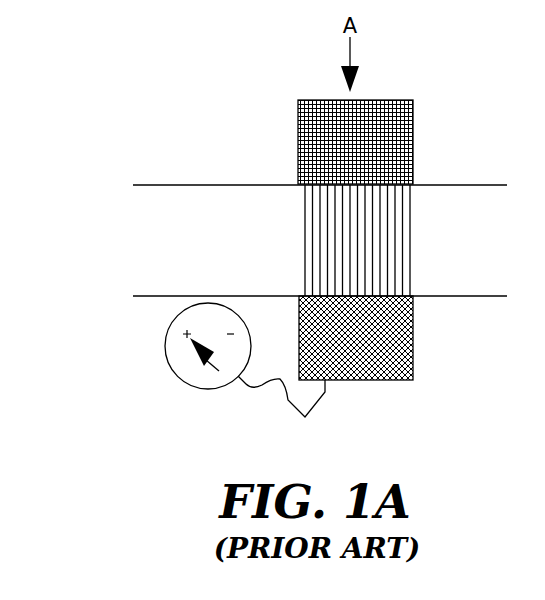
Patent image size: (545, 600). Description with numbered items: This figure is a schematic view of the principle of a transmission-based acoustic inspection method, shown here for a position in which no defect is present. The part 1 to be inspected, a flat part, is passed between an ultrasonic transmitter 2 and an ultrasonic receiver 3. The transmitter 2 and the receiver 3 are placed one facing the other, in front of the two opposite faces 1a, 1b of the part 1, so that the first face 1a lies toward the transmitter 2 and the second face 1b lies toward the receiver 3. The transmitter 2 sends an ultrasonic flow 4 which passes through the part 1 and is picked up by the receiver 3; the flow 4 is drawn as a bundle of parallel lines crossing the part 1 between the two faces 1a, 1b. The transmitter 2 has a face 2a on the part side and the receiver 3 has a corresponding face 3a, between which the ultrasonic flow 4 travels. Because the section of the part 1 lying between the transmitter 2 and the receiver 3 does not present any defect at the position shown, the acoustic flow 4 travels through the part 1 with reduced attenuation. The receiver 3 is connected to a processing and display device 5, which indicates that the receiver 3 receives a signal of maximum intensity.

The part 1 is at (232, 170).
The first face of the part 1a is at (186, 184).
The second face of the part 1b is at (157, 297).
The ultrasonic transmitter 2 is at (299, 120).
The interface of upper electrode with active region 2a is at (408, 230).
The ultrasonic receiver 3 is at (397, 381).
The interface of lower electrode with active region 3a is at (362, 297).
The ultrasonic flow 4 is at (325, 214).
The processing and display device 5 is at (188, 353).